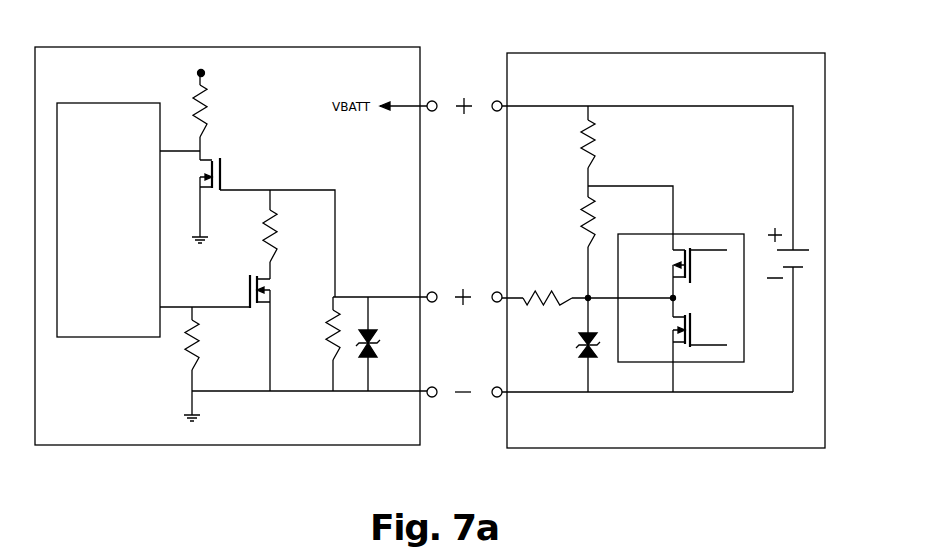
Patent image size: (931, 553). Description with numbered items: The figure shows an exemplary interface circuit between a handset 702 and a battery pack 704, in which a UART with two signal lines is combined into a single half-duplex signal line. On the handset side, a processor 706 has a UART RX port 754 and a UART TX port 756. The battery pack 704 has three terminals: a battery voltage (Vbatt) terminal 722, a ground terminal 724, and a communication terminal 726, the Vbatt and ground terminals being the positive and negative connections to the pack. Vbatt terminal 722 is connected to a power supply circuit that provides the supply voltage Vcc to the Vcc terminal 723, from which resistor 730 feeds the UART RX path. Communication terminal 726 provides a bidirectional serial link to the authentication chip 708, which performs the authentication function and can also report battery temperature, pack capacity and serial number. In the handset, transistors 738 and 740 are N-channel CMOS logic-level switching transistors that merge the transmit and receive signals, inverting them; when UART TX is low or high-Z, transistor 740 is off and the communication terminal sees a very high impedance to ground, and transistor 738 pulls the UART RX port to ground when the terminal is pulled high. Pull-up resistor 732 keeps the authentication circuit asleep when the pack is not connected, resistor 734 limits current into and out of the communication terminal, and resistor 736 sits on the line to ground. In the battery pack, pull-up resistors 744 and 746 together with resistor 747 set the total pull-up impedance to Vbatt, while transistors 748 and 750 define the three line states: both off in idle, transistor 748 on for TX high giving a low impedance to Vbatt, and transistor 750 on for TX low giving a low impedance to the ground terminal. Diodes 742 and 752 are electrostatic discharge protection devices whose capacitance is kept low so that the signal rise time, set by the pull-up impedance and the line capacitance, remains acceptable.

The handset 702 is at (237, 445).
The battery pack 704 is at (717, 448).
The processor 706 is at (108, 103).
The authentication chip 708 is at (683, 234).
The battery voltage (Vbatt) terminal 722 is at (497, 100).
The Vcc terminal 723 is at (214, 61).
The ground terminal 724 is at (497, 398).
The communication terminal 726 is at (497, 292).
The resistor 730 is at (222, 122).
The pull-up resistor 732 is at (252, 234).
The resistor 734 is at (211, 364).
The resistor 736 is at (314, 344).
The transistor 738 is at (263, 227).
The transistor 740 is at (280, 333).
The diode 742 is at (387, 344).
The pull-up resistor 744 is at (569, 151).
The pull-up resistor 746 is at (566, 247).
The resistor 747 is at (547, 287).
The transistor 748 is at (679, 273).
The transistor 750 is at (679, 345).
The diode 752 is at (568, 345).
The UART RX port 754 is at (182, 150).
The UART TX port 756 is at (175, 308).